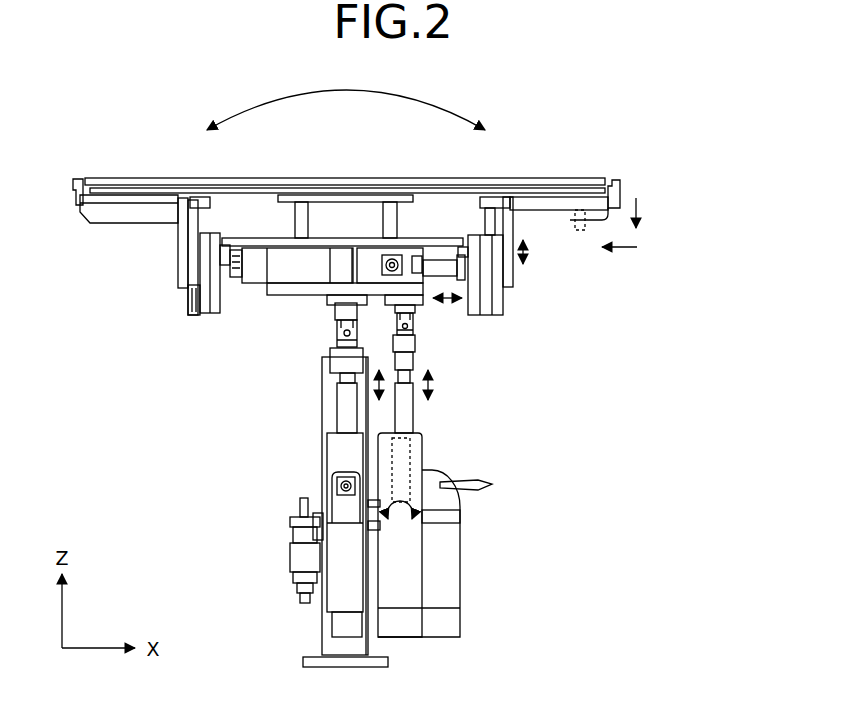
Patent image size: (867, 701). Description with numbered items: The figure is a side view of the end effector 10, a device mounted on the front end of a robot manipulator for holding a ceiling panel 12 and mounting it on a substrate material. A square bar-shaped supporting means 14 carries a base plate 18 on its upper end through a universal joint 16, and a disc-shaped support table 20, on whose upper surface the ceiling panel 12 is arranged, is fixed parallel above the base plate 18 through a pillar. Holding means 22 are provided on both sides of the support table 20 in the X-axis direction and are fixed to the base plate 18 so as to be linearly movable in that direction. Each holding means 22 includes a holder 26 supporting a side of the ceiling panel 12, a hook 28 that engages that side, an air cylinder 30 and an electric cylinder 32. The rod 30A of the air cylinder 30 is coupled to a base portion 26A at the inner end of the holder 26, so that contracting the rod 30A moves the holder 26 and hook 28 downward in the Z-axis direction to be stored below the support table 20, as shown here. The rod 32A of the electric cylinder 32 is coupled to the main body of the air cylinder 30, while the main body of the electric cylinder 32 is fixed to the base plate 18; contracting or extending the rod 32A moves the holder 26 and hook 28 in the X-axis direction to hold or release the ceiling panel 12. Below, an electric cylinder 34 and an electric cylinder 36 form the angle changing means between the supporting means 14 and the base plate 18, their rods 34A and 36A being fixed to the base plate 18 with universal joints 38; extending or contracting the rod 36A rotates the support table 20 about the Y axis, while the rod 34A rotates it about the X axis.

The end effector 10 is at (540, 508).
The ceiling panel 12 is at (568, 178).
The supporting means 14 is at (329, 407).
The universal joint 16 is at (337, 323).
The base plate 18 is at (330, 290).
The support table 20 is at (382, 195).
The holding means 22 is at (708, 140).
The holder 26 is at (580, 198).
The base portion 26A is at (513, 196).
The hook 28 is at (620, 189).
The air cylinder 30 is at (500, 300).
The rod of air cylinder 30A is at (487, 197).
The electric cylinder 32 is at (285, 266).
The rod of electric cylinder 32A is at (461, 238).
The electric cylinder 34 is at (343, 537).
The rod 34A is at (345, 358).
The electric cylinder 36 is at (405, 537).
The rod 36A is at (413, 350).
The universal joint 38 is at (340, 328).